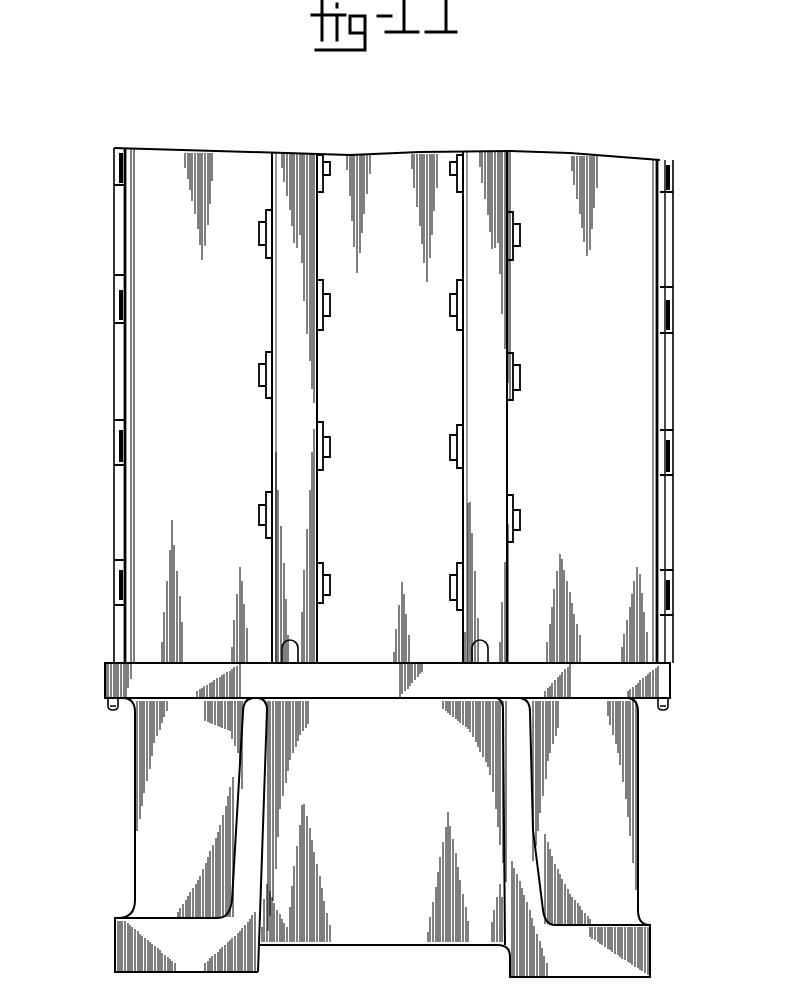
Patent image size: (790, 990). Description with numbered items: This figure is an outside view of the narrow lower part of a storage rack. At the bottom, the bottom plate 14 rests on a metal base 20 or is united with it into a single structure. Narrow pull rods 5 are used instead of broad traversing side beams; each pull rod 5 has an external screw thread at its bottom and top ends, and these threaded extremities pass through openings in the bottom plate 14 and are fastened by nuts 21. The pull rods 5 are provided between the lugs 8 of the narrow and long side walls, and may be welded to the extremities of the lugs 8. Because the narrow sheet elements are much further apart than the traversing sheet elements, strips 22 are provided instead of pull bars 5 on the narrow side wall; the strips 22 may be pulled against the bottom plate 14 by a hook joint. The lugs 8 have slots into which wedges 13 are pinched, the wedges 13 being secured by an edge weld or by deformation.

The pull rod 5 is at (116, 380).
The lug 8 is at (116, 313).
The wedge 13 is at (260, 512).
The bottom plate 14 is at (373, 683).
The metal base 20 is at (250, 888).
The nut 21 is at (105, 698).
The strip 22 is at (300, 532).